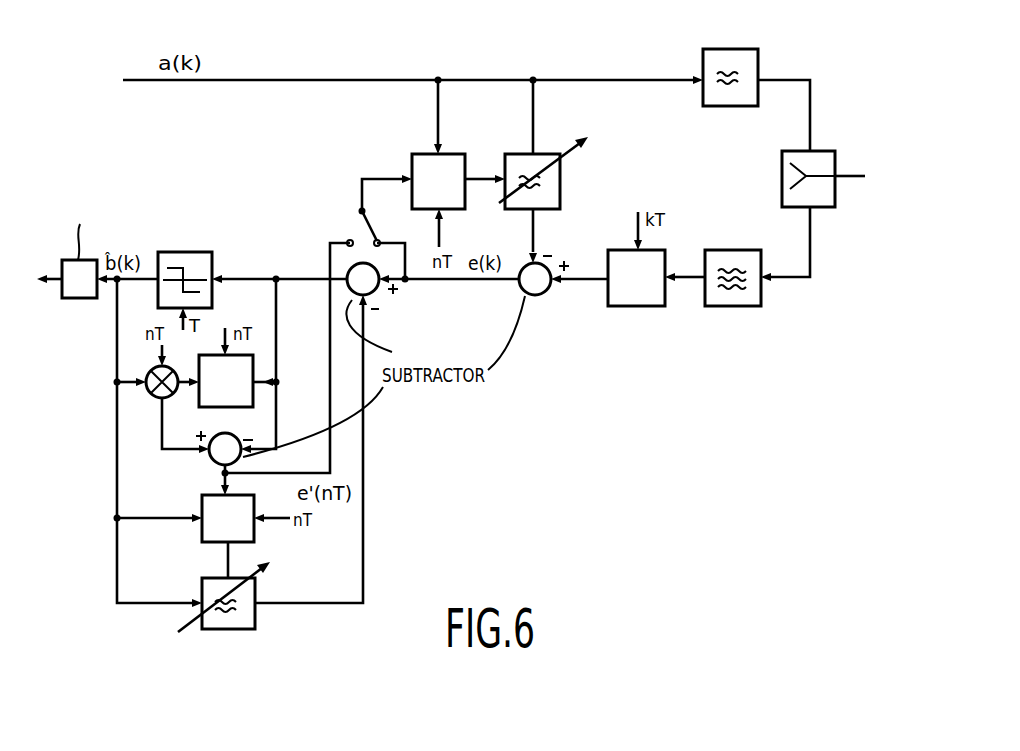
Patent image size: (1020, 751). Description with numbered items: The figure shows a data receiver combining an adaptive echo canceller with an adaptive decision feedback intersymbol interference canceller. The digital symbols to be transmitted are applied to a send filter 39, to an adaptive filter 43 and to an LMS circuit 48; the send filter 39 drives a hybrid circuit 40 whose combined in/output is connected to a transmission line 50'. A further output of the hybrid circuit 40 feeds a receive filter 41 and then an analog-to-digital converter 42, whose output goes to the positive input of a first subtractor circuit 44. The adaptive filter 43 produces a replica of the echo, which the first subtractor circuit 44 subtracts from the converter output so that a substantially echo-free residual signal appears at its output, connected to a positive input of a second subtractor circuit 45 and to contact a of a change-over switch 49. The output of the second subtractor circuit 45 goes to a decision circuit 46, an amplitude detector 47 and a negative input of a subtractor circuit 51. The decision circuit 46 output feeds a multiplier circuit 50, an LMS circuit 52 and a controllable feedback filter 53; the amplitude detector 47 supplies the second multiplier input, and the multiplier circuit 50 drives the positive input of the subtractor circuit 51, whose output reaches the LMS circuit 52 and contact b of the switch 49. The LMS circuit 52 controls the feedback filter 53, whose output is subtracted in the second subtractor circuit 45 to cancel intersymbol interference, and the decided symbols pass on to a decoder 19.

The decoder 19 is at (84, 298).
The send filter 39 is at (765, 38).
The hybrid circuit 40 is at (820, 208).
The receive filter 41 is at (722, 307).
The analog-to-digital converter 42 is at (624, 307).
The adaptive filter 43 is at (561, 181).
The first subtractor circuit 44 is at (545, 291).
The second subtractor circuit 45 is at (371, 293).
The decision circuit 46 is at (188, 252).
The amplitude detector 47 is at (235, 408).
The LMS circuit 48 is at (459, 140).
The change-over switch 49 is at (355, 226).
The multiplier circuit 50 is at (158, 392).
The transmission line 50' is at (846, 146).
The subtractor circuit 51 is at (216, 460).
The LMS circuit 52 is at (200, 536).
The controllable feedback filter 53 is at (238, 630).